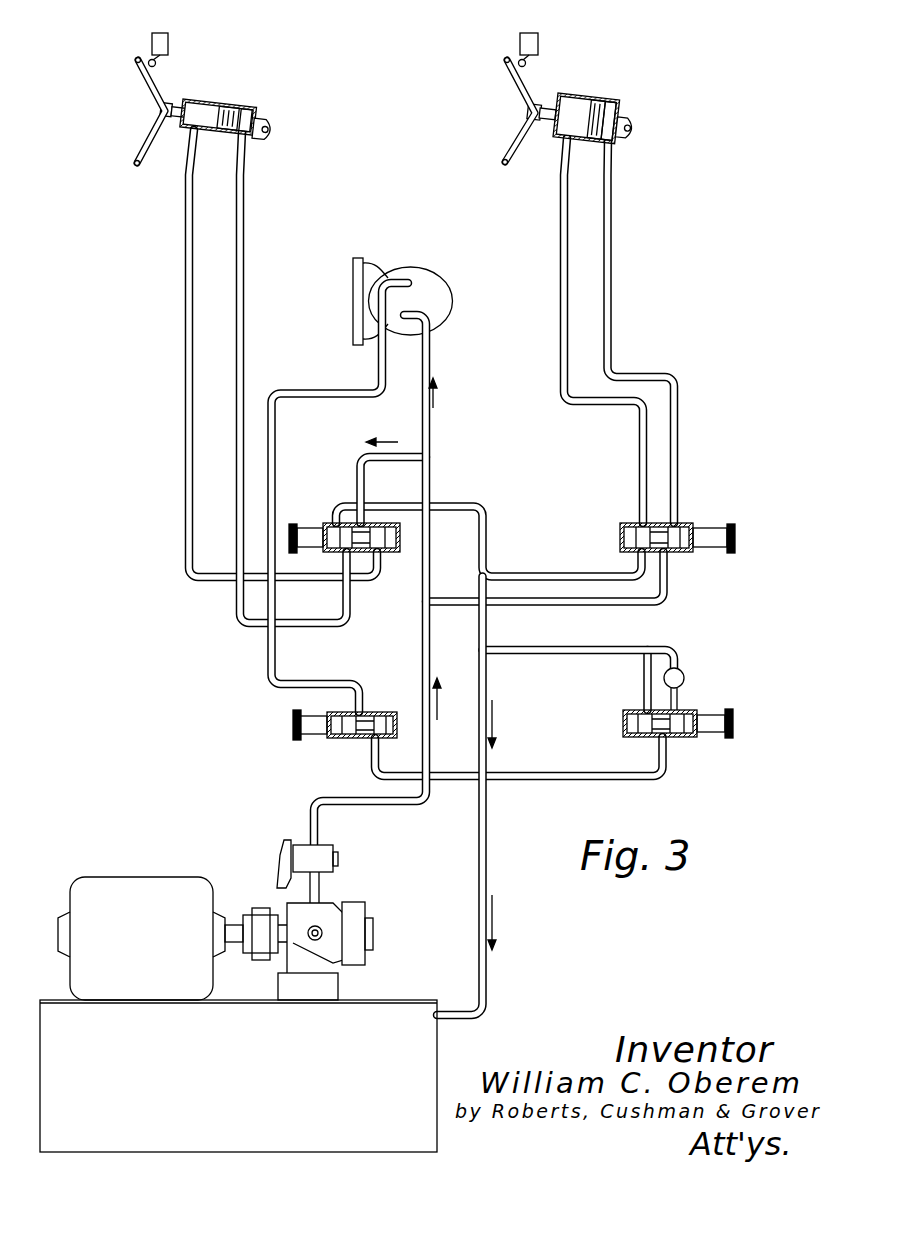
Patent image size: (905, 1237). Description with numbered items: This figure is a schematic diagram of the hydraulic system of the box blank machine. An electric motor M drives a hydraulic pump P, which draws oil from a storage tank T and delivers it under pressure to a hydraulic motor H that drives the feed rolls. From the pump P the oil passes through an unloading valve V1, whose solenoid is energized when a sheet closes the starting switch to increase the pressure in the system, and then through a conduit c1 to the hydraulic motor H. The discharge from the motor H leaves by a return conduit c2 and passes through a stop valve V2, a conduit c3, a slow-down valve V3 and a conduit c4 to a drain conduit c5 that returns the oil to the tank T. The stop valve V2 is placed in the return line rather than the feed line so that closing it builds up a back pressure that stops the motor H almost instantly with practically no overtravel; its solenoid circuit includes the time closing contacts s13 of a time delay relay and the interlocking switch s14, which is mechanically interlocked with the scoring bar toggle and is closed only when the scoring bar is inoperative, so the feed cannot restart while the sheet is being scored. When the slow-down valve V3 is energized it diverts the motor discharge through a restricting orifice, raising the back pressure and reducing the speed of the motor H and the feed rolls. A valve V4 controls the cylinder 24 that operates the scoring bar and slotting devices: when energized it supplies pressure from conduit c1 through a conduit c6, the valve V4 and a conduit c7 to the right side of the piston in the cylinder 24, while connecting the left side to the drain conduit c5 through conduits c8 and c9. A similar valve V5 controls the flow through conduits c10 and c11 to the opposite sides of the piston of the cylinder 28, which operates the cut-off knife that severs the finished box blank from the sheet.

The time closing contacts s13 is at (168, 46).
The interlocking switch s14 is at (524, 44).
The cylinder 28 is at (256, 104).
The cylinder 24 is at (623, 96).
The hydraulic motor H is at (427, 276).
The conduit c1 is at (423, 647).
The return conduit c2 is at (310, 392).
The conduit c3 is at (538, 773).
The conduit c4 is at (597, 648).
The drain conduit c5 is at (480, 892).
The conduit c6 is at (519, 617).
The conduit c7 is at (612, 292).
The conduit c8 is at (562, 268).
The conduit c9 is at (557, 575).
The conduit c10 is at (245, 331).
The conduit c11 is at (187, 368).
The unloading valve V1 is at (285, 853).
The stop valve V2 is at (312, 738).
The slow-down valve V3 is at (733, 712).
The valve V4 is at (704, 519).
The valve V5 is at (340, 522).
The electric motor M is at (168, 938).
The hydraulic pump P is at (356, 906).
The storage tank T is at (238, 1076).